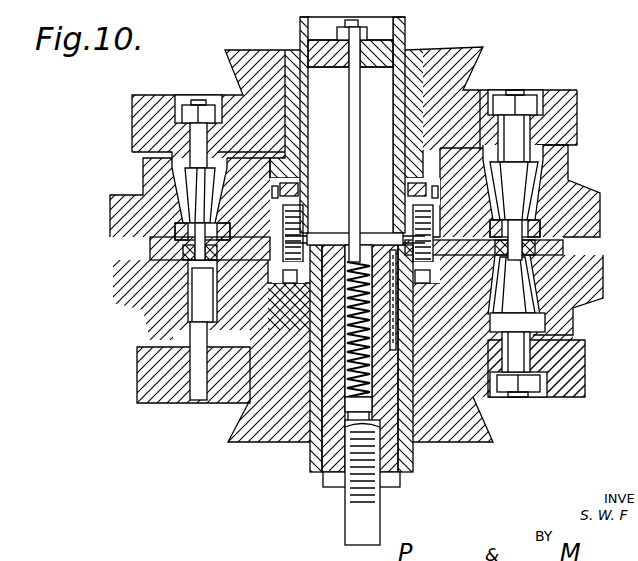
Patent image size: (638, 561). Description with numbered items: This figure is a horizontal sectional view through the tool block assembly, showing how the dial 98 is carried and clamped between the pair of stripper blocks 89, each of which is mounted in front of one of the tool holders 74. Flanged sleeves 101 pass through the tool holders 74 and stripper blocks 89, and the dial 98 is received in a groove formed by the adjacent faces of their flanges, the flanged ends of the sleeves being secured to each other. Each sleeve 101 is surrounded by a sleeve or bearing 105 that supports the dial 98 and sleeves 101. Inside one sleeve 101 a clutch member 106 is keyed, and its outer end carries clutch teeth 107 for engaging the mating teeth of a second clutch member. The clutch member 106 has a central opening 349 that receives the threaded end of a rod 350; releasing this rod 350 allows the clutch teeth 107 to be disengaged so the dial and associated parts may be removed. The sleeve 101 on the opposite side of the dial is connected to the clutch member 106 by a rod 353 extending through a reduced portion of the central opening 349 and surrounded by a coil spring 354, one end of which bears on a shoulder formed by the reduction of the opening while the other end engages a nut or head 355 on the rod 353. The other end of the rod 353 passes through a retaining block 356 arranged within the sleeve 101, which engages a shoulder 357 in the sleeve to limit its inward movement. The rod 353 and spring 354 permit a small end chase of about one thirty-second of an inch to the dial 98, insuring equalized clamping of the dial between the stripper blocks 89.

The tool holder 74 is at (572, 117).
The stripper block 89 is at (557, 172).
The dial 98 is at (567, 243).
The sleeve 101 is at (396, 153).
The sleeve or bearing 105 is at (425, 74).
The clutch member 106 is at (330, 447).
The clutch teeth 107 is at (332, 482).
The central opening 349 is at (357, 412).
The rod 350 is at (353, 515).
The rod 353 is at (351, 125).
The coil spring 354 is at (348, 260).
The nut or head 355 is at (353, 398).
The retaining block 356 is at (384, 6).
The shoulder 357 is at (400, 53).